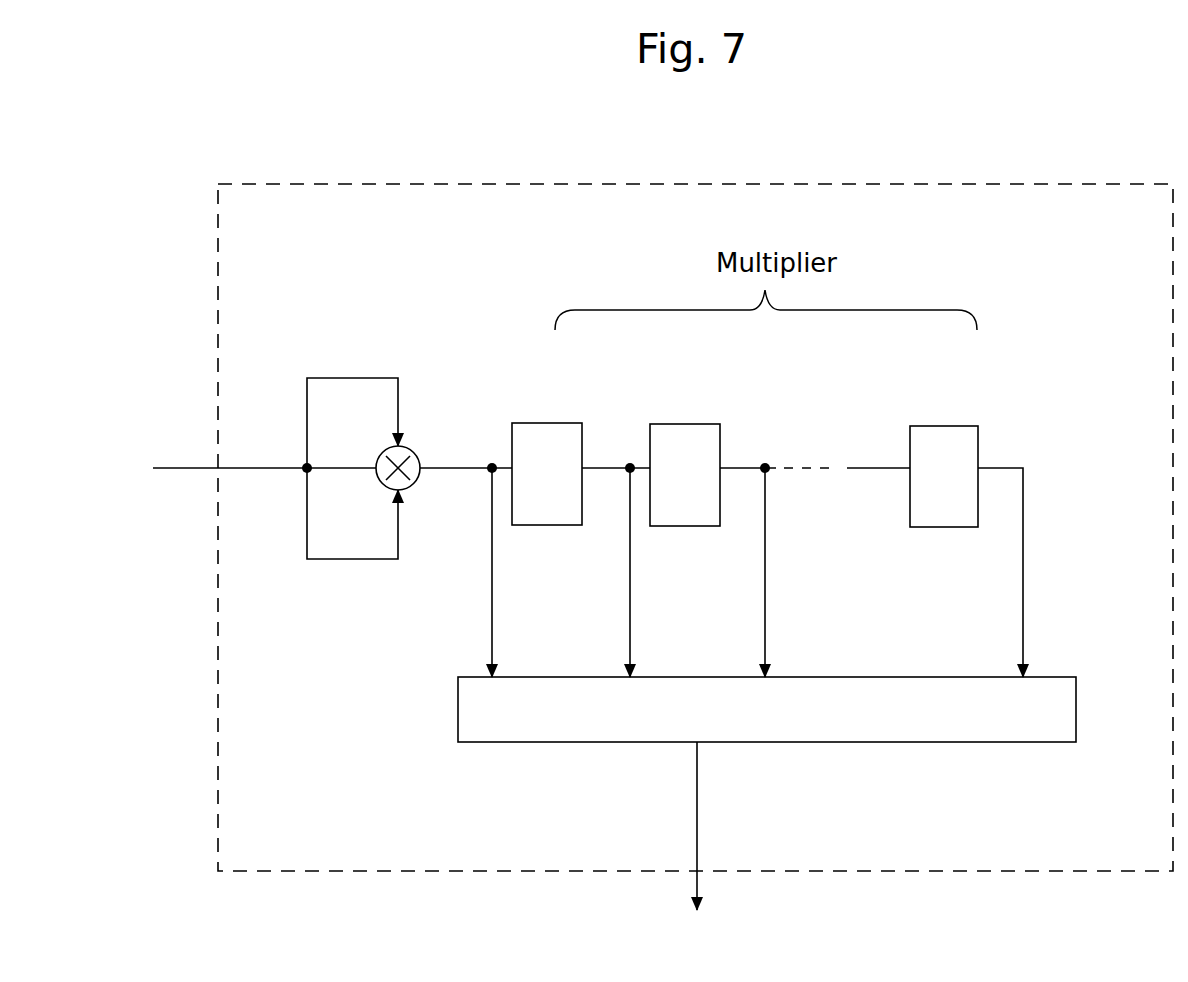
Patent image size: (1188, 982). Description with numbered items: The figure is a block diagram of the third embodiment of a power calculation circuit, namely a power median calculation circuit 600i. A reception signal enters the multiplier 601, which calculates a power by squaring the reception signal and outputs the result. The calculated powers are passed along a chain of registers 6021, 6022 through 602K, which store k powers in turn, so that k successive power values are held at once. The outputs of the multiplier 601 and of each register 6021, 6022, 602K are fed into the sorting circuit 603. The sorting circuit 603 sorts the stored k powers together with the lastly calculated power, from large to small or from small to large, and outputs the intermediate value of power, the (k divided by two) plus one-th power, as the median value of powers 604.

The correlator / receiver branch unit 600i is at (695, 473).
The multiplier 601 is at (390, 453).
The register 6021 is at (553, 432).
The register 6022 is at (700, 432).
The register 602K is at (962, 433).
The sorting circuit 603 is at (767, 755).
The median value of powers 604 is at (760, 826).